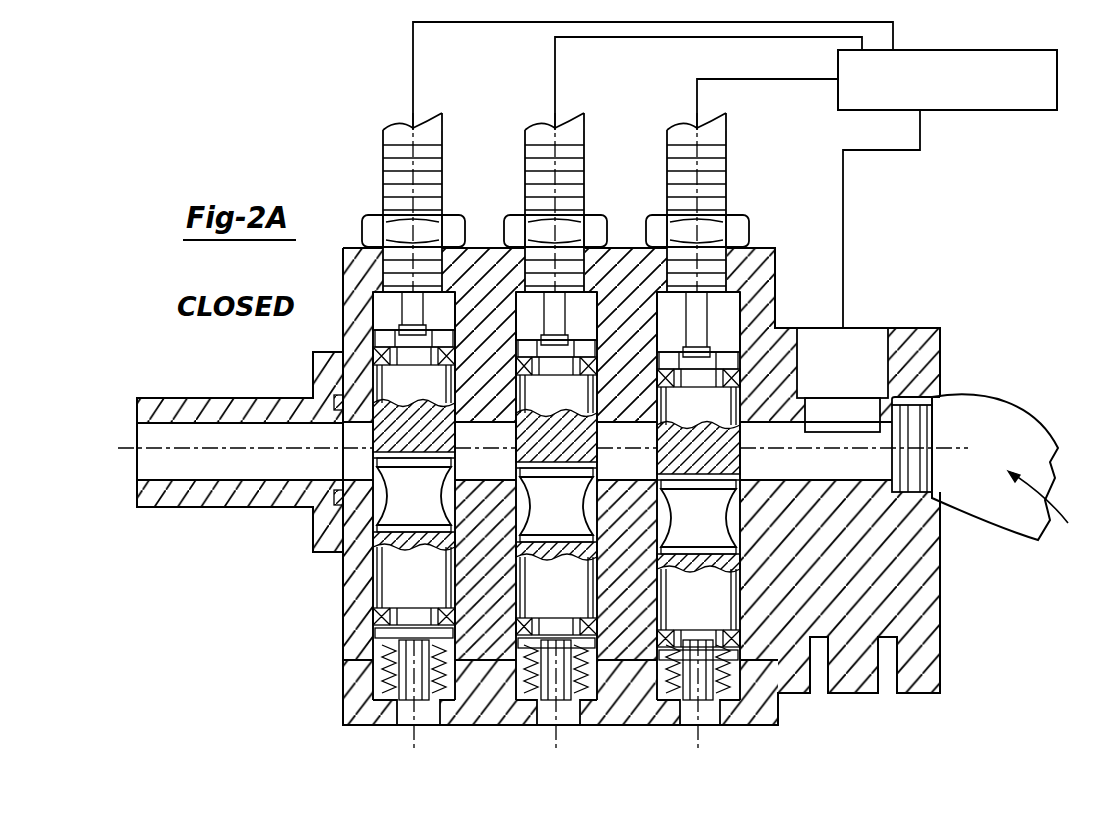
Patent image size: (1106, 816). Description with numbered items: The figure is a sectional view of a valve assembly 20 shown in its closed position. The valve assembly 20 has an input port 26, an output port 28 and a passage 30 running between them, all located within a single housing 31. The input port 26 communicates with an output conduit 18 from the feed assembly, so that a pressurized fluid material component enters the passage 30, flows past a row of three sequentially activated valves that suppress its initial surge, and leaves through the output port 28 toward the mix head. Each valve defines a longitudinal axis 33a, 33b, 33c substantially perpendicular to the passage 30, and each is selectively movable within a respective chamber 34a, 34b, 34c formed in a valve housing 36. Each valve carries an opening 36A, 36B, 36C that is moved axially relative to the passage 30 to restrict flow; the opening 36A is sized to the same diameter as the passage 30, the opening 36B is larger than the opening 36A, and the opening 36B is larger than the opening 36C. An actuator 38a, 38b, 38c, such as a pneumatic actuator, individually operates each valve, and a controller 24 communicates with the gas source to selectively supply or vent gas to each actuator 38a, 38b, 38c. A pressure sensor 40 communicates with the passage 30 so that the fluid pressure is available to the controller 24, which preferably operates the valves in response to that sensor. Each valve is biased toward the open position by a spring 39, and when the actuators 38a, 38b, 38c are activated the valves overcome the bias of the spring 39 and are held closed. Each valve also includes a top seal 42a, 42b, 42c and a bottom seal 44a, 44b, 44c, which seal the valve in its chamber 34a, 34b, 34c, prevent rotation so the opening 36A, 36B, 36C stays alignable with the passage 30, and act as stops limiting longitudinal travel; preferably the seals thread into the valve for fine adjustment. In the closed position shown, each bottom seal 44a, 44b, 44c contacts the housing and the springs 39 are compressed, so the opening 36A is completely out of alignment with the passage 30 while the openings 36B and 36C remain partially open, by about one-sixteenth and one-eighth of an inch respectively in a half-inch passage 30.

The output conduit 18 is at (990, 492).
The valve assembly 20 is at (298, 685).
The controller 24 is at (998, 112).
The input port 26 is at (913, 412).
The output port 28 is at (163, 471).
The passage 30 is at (863, 474).
The housing 31 is at (945, 668).
The longitudinal axis 33a is at (677, 715).
The longitudinal axis 33b is at (535, 716).
The longitudinal axis 33c is at (408, 737).
The chamber 34a is at (711, 496).
The chamber 34b is at (571, 496).
The chamber 34c is at (458, 563).
The valve housing 36 is at (937, 615).
The opening 36A is at (698, 517).
The opening 36B is at (556, 505).
The opening 36C is at (428, 506).
The actuator 38a is at (713, 202).
The actuator 38b is at (574, 200).
The actuator 38c is at (437, 138).
The spring 39 is at (530, 683).
The pressure sensor 40 is at (849, 368).
The top seal 42a is at (729, 311).
The top seal 42b is at (576, 288).
The top seal 42c is at (430, 357).
The bottom seal 44a is at (698, 608).
The bottom seal 44b is at (556, 596).
The bottom seal 44c is at (430, 620).